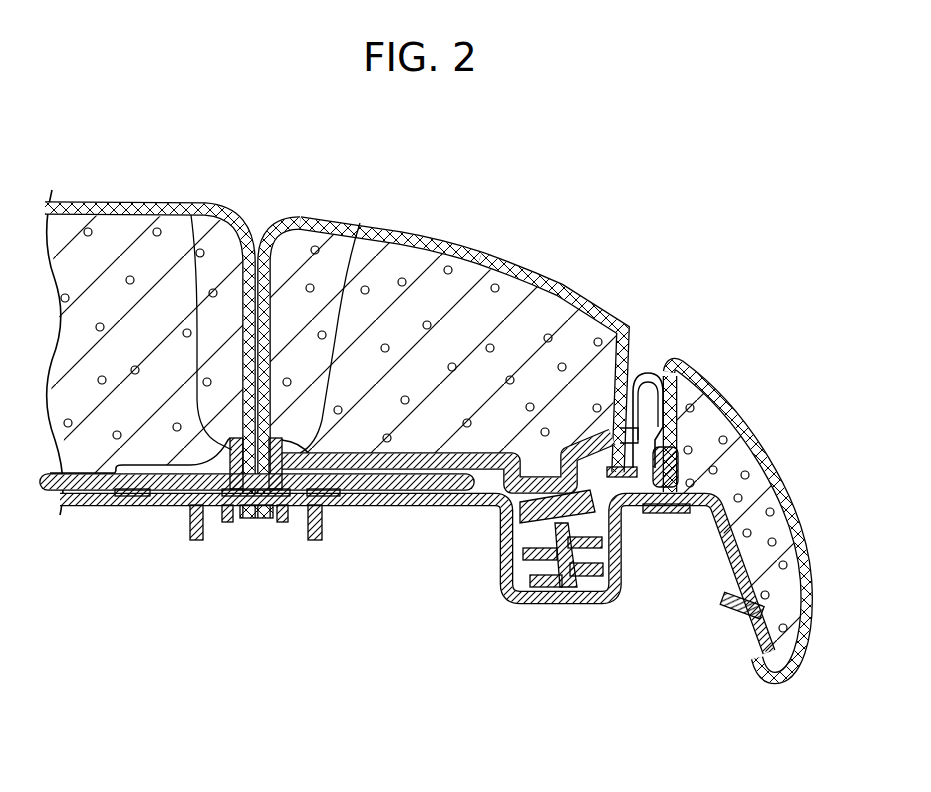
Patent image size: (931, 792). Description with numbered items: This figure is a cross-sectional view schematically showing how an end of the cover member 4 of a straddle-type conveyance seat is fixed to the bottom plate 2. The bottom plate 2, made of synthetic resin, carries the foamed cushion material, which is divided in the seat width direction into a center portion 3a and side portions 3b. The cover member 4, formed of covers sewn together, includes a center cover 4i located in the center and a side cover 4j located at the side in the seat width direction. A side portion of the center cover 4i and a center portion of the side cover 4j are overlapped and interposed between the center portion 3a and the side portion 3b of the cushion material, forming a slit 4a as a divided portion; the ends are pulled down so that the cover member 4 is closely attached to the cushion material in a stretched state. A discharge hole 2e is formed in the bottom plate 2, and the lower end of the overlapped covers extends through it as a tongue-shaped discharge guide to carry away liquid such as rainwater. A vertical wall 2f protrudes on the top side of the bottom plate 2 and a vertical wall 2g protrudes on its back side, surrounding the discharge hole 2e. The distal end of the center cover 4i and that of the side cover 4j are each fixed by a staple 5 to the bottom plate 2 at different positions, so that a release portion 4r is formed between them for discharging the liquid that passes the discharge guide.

The bottom plate 2 is at (130, 505).
The discharge hole 2e is at (247, 520).
The vertical wall 2f is at (191, 215).
The vertical wall 2g is at (192, 522).
The center portion 3a is at (100, 235).
The side portions 3b is at (463, 272).
The cover member 4 is at (535, 290).
The slit 4a is at (270, 237).
The center cover 4i is at (158, 203).
The side cover 4j is at (440, 235).
The release portion 4r is at (260, 520).
The staples 5 is at (226, 525).